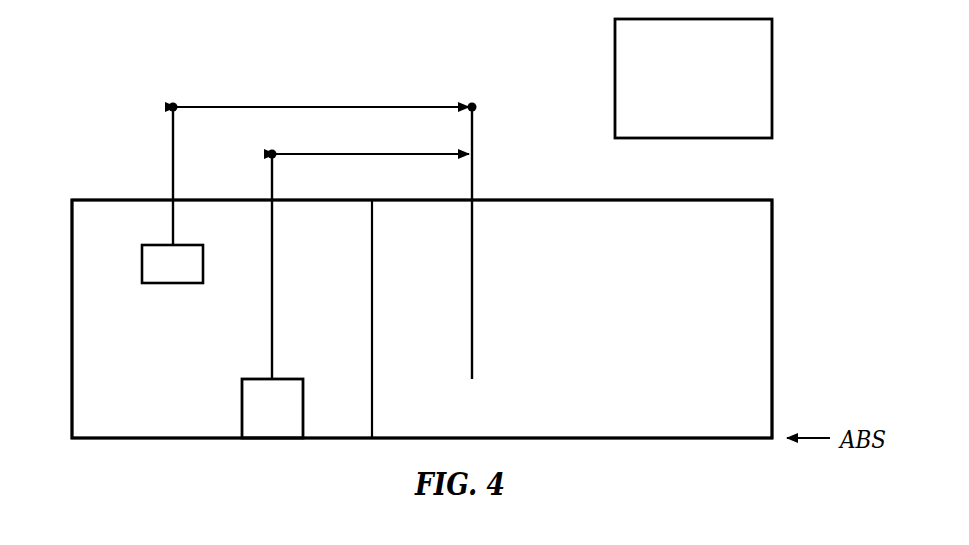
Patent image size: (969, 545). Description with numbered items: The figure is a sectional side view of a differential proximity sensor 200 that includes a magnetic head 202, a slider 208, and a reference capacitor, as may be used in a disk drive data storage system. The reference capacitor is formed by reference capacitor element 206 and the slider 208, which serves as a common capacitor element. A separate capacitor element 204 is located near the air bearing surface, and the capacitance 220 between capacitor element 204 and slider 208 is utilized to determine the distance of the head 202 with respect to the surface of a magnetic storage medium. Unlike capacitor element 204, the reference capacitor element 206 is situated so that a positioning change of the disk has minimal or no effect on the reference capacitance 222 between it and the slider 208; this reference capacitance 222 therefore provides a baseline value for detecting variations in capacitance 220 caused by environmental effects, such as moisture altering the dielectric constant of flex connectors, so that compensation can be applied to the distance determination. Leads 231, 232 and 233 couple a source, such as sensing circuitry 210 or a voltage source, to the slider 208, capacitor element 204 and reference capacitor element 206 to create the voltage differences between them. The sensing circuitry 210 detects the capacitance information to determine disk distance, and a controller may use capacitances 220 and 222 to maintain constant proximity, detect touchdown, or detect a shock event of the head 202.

The differential proximity sensor 200 is at (147, 48).
The magnetic head 202 is at (120, 216).
The capacitor element 204 is at (260, 378).
The reference capacitor element 206 is at (158, 284).
The slider 208 is at (522, 215).
The sensing circuitry 210 is at (716, 90).
The capacitance 220 is at (373, 153).
The reference capacitance 222 is at (323, 106).
The lead 231 is at (474, 132).
The lead 232 is at (270, 182).
The lead 233 is at (172, 143).